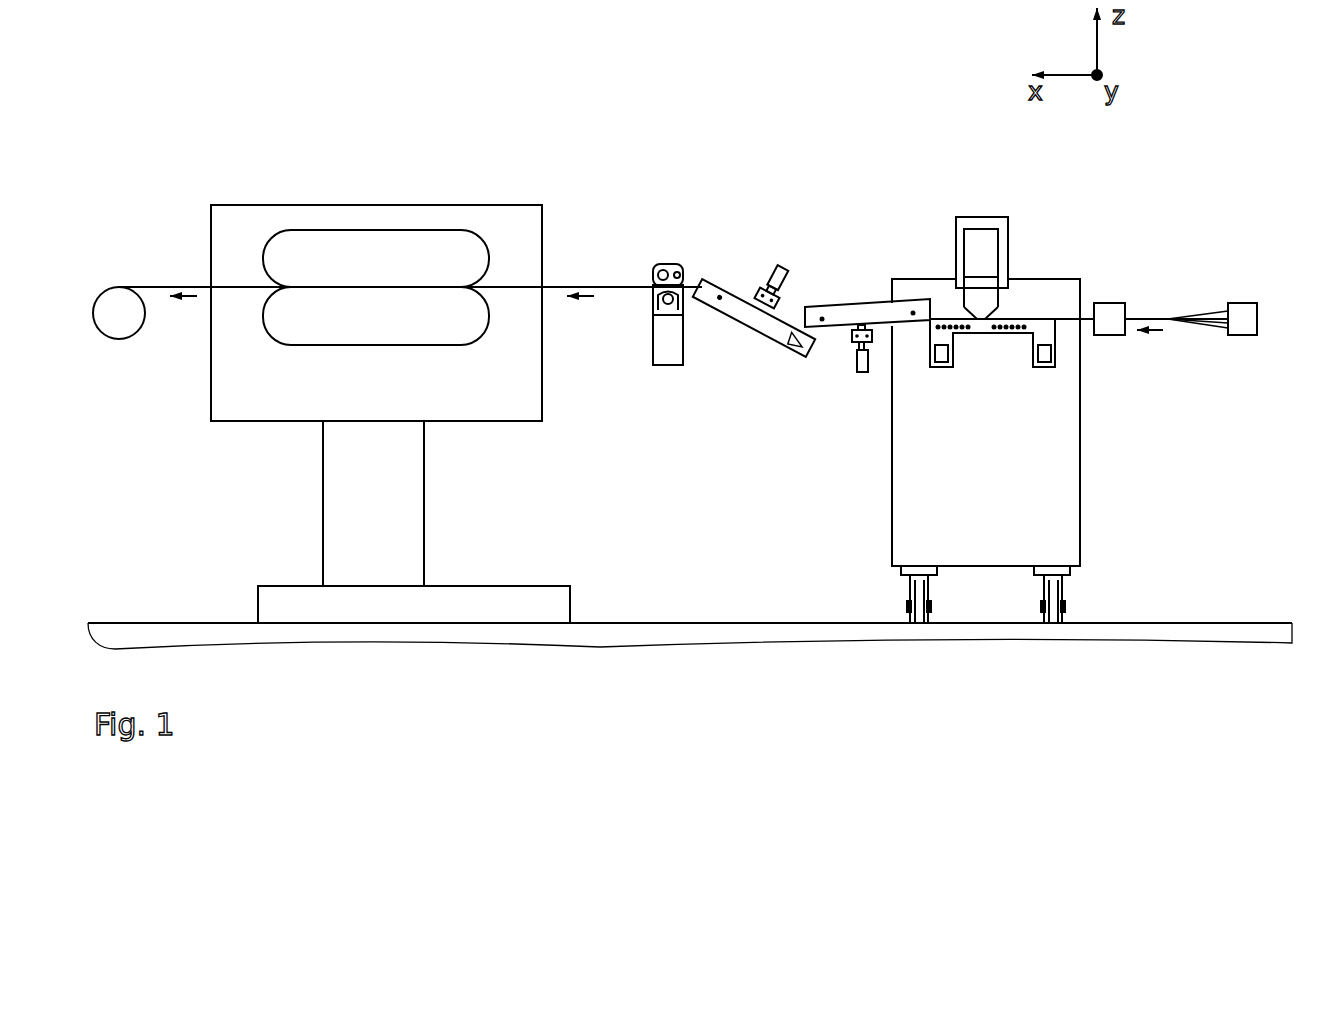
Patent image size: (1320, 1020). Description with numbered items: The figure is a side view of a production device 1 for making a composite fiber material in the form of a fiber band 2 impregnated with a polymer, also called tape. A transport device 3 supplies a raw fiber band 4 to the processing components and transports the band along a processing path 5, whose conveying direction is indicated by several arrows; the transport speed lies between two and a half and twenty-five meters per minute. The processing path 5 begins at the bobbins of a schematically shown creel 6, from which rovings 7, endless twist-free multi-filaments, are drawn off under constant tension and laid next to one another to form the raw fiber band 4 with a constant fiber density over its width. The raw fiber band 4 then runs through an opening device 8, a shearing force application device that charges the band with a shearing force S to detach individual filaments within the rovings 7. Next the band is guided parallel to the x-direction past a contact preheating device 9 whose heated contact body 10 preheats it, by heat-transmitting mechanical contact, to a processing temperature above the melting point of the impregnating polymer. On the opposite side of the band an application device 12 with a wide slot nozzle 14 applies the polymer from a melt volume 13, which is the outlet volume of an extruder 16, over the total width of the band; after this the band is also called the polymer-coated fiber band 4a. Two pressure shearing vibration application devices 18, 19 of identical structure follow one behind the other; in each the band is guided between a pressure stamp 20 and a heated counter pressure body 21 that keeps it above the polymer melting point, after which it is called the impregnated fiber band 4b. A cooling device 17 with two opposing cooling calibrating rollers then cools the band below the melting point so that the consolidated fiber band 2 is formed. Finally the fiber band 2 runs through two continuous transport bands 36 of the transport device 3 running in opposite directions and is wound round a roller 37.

The production device 1 is at (768, 142).
The fiber band 2 is at (580, 285).
The transport device 3 is at (296, 202).
The raw fiber band 4 is at (1143, 312).
The polymer-coated fiber band 4a is at (933, 298).
The impregnated fiber band 4b is at (695, 280).
The processing path 5 is at (608, 293).
The creel 6 is at (1240, 305).
The rovings 7 is at (1218, 318).
The opening device 8 is at (1122, 335).
The contact preheating device 9 is at (1048, 337).
The contact body 10 is at (980, 327).
The application device 12 is at (1005, 251).
The melt volume 13 is at (975, 252).
The wide slot nozzle 14 is at (987, 298).
The extruder 16 is at (1062, 505).
The cooling device 17 is at (660, 369).
The first pressure shearing vibration application device 18 is at (845, 350).
The second pressure shearing vibration application device 19 is at (797, 291).
The pressure stamp 20 is at (761, 283).
The counter pressure body 21 is at (857, 300).
The continuous transport bands 36 is at (484, 297).
The roller 37 is at (118, 296).
The shearing force S is at (1110, 302).